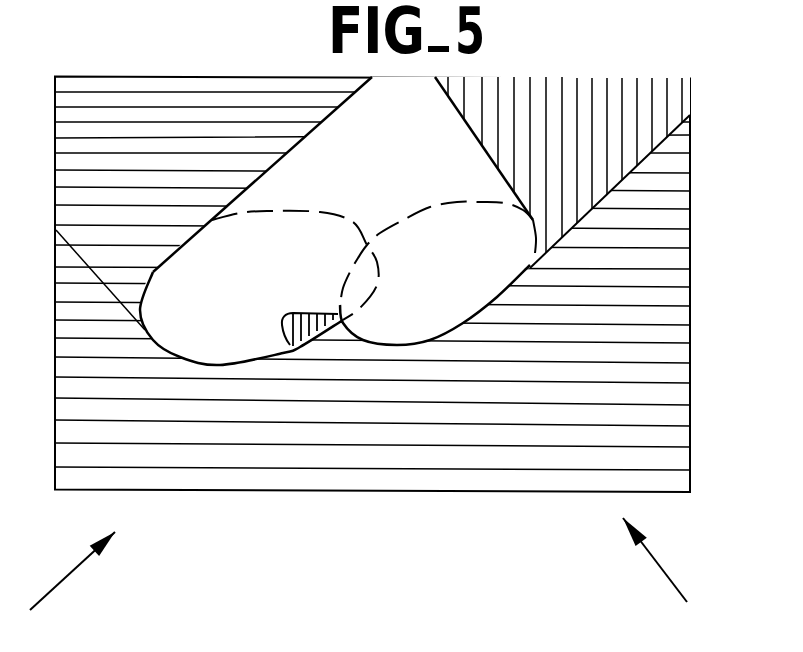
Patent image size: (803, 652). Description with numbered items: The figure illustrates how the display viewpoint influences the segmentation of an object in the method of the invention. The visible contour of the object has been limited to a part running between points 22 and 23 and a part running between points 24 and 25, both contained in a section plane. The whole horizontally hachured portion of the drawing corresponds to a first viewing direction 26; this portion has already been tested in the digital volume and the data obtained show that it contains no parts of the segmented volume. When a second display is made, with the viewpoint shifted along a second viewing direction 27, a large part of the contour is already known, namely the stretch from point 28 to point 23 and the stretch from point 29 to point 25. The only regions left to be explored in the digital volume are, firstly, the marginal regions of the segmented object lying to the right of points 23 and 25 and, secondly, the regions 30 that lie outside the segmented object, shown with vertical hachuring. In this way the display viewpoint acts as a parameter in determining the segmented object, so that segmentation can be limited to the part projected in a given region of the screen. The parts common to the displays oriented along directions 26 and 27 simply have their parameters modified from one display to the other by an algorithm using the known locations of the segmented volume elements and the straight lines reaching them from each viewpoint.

The contour part end point 22 is at (157, 270).
The contour part end point 23 is at (287, 348).
The contour part end point 24 is at (348, 272).
The contour part end point 25 is at (530, 266).
The first viewing direction 26 is at (78, 566).
The second viewing direction 27 is at (660, 572).
The contour end point 28 is at (151, 340).
The contour end point 29 is at (350, 329).
The outside region 30 is at (608, 95).